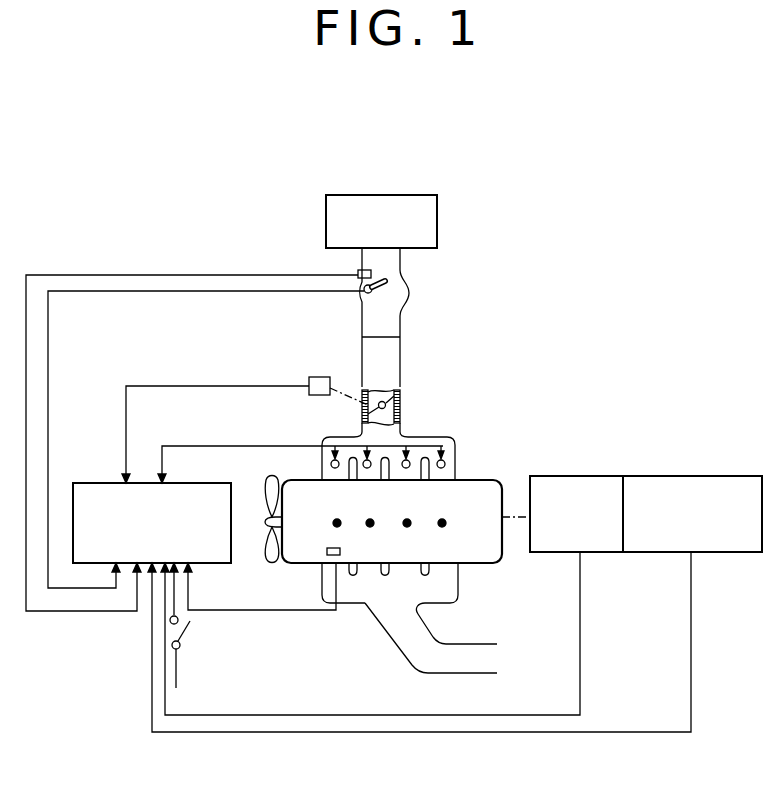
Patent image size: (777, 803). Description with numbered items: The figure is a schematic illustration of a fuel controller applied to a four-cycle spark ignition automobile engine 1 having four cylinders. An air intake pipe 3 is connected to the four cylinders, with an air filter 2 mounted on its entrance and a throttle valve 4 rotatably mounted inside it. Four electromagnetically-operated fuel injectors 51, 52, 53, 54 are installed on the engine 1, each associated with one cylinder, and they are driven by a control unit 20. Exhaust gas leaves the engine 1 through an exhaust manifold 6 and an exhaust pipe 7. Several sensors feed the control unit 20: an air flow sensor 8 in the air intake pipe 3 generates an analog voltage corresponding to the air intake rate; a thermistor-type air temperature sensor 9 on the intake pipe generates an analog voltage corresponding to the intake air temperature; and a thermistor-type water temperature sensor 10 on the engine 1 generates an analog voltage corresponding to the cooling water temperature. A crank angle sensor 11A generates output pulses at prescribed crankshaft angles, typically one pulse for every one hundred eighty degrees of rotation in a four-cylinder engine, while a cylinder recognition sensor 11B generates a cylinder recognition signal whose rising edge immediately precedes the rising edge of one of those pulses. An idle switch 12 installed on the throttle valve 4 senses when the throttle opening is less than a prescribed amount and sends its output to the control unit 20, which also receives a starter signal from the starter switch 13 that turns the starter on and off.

The engine 1 is at (468, 479).
The air filter 2 is at (438, 218).
The air intake pipe 3 is at (400, 341).
The throttle valve 4 is at (400, 408).
The exhaust manifold 6 is at (458, 583).
The exhaust pipe 7 is at (425, 673).
The air flow sensor 8 is at (388, 290).
The air temperature sensor 9 is at (358, 270).
The water temperature sensor 10 is at (327, 551).
The crank angle sensor 11A is at (582, 476).
The cylinder recognition sensor 11B is at (698, 476).
The idle switch 12 is at (319, 377).
The starter switch 13 is at (181, 643).
The control unit 20 is at (110, 483).
The fuel injector 51 is at (333, 468).
The fuel injector 52 is at (366, 468).
The fuel injector 53 is at (406, 468).
The fuel injector 54 is at (442, 468).